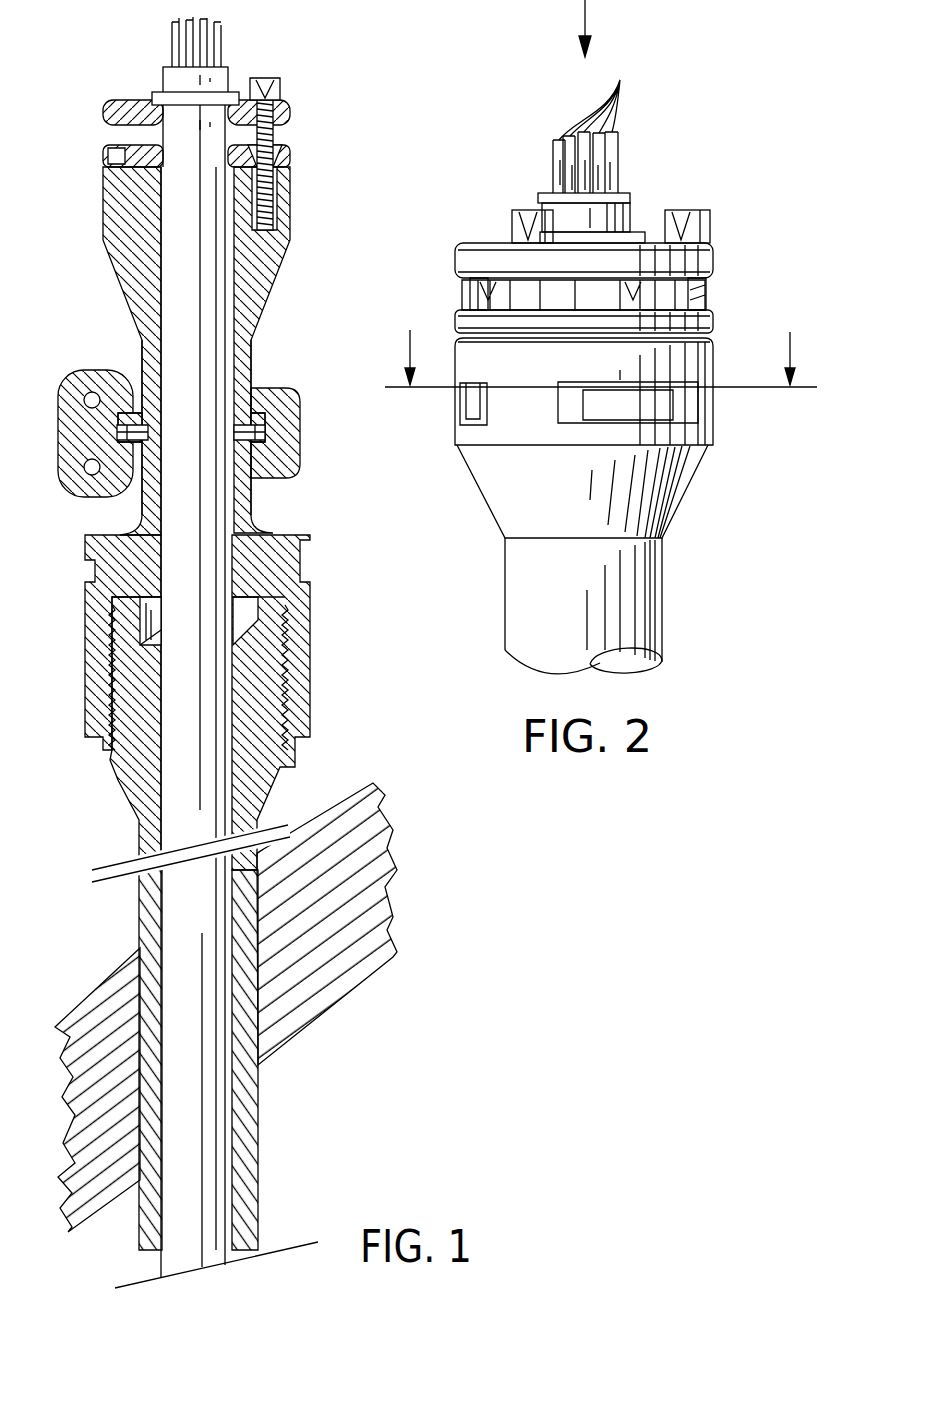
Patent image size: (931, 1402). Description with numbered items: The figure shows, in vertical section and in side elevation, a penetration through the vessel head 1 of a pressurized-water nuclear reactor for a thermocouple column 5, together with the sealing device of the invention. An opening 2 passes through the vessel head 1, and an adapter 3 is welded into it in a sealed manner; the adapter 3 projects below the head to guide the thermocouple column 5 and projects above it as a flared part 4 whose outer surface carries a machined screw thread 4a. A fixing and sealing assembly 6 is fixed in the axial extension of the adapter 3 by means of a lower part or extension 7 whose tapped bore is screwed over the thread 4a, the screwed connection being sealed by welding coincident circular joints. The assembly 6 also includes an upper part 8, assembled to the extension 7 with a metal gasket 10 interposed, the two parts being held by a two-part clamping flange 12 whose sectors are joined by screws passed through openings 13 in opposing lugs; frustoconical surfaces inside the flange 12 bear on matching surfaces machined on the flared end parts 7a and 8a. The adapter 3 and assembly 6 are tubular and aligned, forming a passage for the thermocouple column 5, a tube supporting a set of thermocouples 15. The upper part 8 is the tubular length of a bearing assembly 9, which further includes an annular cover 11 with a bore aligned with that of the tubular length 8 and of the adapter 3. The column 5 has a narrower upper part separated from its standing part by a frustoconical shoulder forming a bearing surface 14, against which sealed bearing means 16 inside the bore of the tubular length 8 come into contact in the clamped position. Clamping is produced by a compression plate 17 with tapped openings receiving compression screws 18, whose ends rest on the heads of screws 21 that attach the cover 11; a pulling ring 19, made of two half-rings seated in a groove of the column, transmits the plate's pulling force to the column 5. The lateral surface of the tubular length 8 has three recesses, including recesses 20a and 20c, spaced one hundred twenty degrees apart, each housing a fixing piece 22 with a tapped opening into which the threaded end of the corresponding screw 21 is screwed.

In FIG. 1, the vessel head 1 is at (305, 985).
In FIG. 1, the opening 2 is at (250, 1010).
In FIG. 1, the adapter 3 is at (140, 938).
In FIG. 1, the flared part 4 is at (138, 782).
In FIG. 1, the screw thread 4a is at (290, 680).
In FIG. 1, the thermocouple column 5 is at (205, 1205).
In FIG. 2, the thermocouple column 5 is at (570, 28).
In FIG. 1, the fixing and sealing assembly 6 is at (273, 527).
In FIG. 2, the fixing and sealing assembly 6 is at (597, 358).
In FIG. 1, the lower part (extension) 7 is at (88, 625).
In FIG. 1, the flared end part 7a is at (285, 472).
In FIG. 1, the upper part (tubular length) 8 is at (255, 295).
In FIG. 2, the upper part (tubular length) 8 is at (660, 490).
In FIG. 1, the flared end part 8a is at (280, 388).
In FIG. 1, the bearing assembly 9 is at (300, 185).
In FIG. 2, the bearing assembly 9 is at (714, 365).
In FIG. 1, the metal gasket 10 is at (262, 432).
In FIG. 1, the cover 11 is at (290, 157).
In FIG. 2, the cover 11 is at (710, 320).
In FIG. 1, the clamping flange 12 is at (285, 412).
In FIG. 1, the openings 13 is at (93, 380).
In FIG. 1, the bearing surface 14 is at (248, 250).
In FIG. 1, the thermocouples 15 is at (222, 58).
In FIG. 2, the thermocouples 15 is at (595, 122).
In FIG. 1, the sealed bearing means 16 is at (218, 172).
In FIG. 1, the compression plate 17 is at (280, 112).
In FIG. 2, the compression plate 17 is at (705, 265).
In FIG. 1, the compression screws 18 is at (272, 86).
In FIG. 2, the compression screws 18 is at (512, 212).
In FIG. 1, the pulling ring 19 is at (178, 98).
In FIG. 2, the pulling ring 19 is at (642, 232).
In FIG. 2, the recess 20a is at (690, 410).
In FIG. 2, the recess 20c is at (458, 405).
In FIG. 1, the screws 21 is at (262, 182).
In FIG. 2, the fixing piece 22 is at (620, 410).